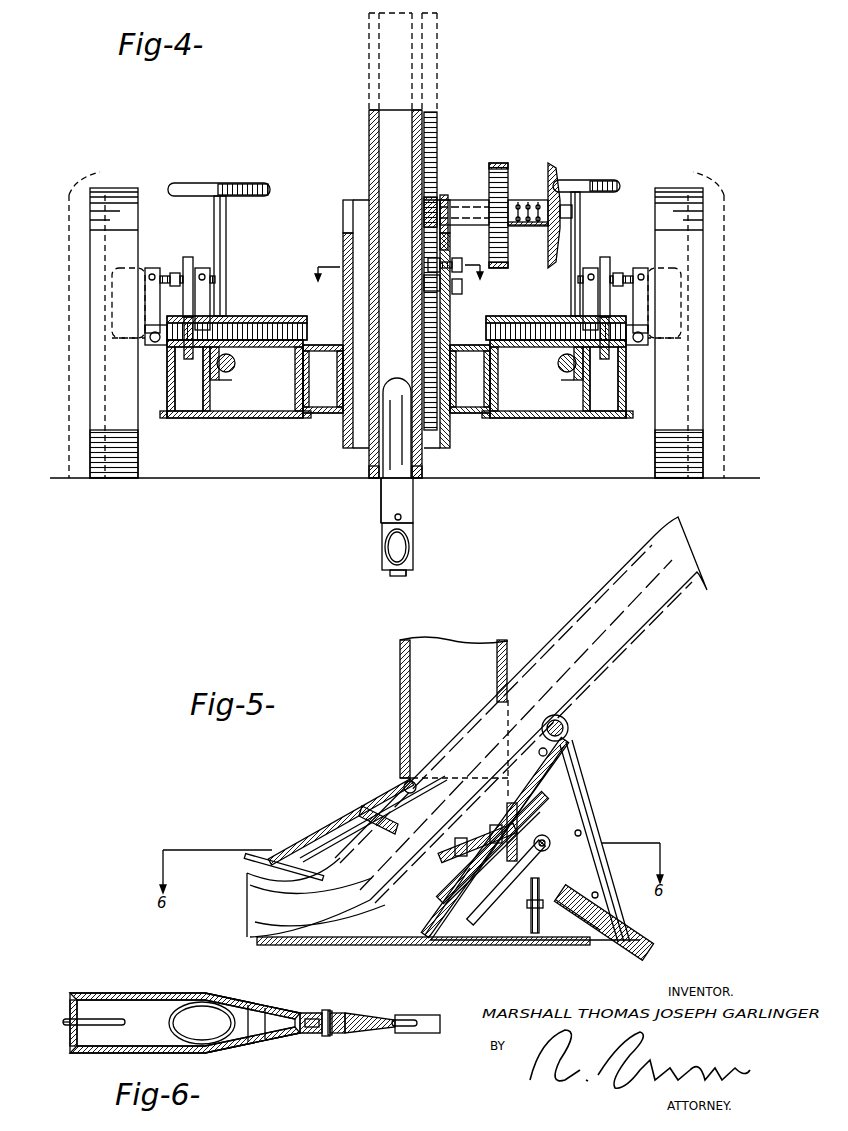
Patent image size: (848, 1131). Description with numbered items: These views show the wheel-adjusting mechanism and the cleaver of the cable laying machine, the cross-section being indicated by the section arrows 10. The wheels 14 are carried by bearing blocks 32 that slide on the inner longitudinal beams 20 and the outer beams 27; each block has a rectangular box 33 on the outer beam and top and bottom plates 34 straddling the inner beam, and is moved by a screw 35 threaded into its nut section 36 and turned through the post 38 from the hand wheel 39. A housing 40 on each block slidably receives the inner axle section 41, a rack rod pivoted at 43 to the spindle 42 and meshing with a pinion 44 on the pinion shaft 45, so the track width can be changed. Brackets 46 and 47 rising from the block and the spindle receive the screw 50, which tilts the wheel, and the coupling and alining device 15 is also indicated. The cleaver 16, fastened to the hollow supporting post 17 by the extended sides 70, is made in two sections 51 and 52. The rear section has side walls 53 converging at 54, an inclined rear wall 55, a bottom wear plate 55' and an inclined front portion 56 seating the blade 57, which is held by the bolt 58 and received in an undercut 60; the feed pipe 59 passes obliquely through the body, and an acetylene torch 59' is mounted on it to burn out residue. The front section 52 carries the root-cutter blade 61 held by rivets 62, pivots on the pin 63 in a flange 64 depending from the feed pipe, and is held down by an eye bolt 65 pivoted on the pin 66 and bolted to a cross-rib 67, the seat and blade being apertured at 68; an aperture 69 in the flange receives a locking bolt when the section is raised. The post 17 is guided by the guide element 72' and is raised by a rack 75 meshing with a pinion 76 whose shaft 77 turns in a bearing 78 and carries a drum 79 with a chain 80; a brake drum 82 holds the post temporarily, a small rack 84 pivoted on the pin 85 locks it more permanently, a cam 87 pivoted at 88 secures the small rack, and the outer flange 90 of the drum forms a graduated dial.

In FIG. 4, the feeder assembly section 10 is at (399, 282).
In FIG. 4, the wheels 14 is at (113, 190).
In FIG. 4, the coupling and alining device 15 is at (250, 283).
In FIG. 4, the cleaver 16 is at (381, 500).
In FIG. 5, the cleaver 16 is at (323, 805).
In FIG. 6, the cleaver 16 is at (187, 985).
In FIG. 4, the supporting post 17 is at (365, 168).
In FIG. 5, the supporting post 17 is at (400, 662).
In FIG. 4, the longitudinal beams 20 is at (296, 388).
In FIG. 4, the outer beams 27 is at (207, 418).
In FIG. 4, the bearing blocks 32 is at (276, 418).
In FIG. 4, the rectangular box 33 is at (185, 418).
In FIG. 4, the top and bottom plates 34 is at (283, 347).
In FIG. 4, the screw 35 is at (235, 364).
In FIG. 4, the nut section 36 is at (224, 375).
In FIG. 4, the post 38 is at (226, 215).
In FIG. 4, the hand wheel 39 is at (233, 183).
In FIG. 4, the housing 40 is at (275, 316).
In FIG. 4, the inner axle section 41 is at (307, 333).
In FIG. 4, the spindle 42 is at (145, 339).
In FIG. 4, the pivot 43 is at (155, 343).
In FIG. 4, the pinion 44 is at (188, 350).
In FIG. 4, the pinion shaft 45 is at (187, 257).
In FIG. 4, the bracket 46 is at (202, 268).
In FIG. 4, the bracket 47 is at (153, 268).
In FIG. 4, the screw 50 is at (224, 274).
In FIG. 4, the rear section 51 is at (413, 499).
In FIG. 5, the rear section 51 is at (318, 832).
In FIG. 6, the rear section 51 is at (68, 1015).
In FIG. 5, the front section 52 is at (590, 806).
In FIG. 6, the front section 52 is at (345, 1012).
In FIG. 4, the side walls 53 is at (382, 532).
In FIG. 5, the side walls 53 is at (336, 858).
In FIG. 6, the side walls 53 is at (105, 993).
In FIG. 6, the converging portion 54 is at (262, 1005).
In FIG. 4, the inclined rear wall 55 is at (378, 514).
In FIG. 5, the inclined rear wall 55 is at (366, 792).
In FIG. 4, the bottom wear plate 55' is at (429, 580).
In FIG. 5, the bottom wear plate 55' is at (423, 955).
In FIG. 5, the inclined portion 56 is at (570, 945).
In FIG. 4, the blade 57 is at (393, 576).
In FIG. 5, the blade 57 is at (635, 937).
In FIG. 6, the blade 57 is at (433, 1034).
In FIG. 5, the bolt 58 is at (535, 935).
In FIG. 4, the feed pipe 59 is at (376, 455).
In FIG. 5, the feed pipe 59 is at (457, 727).
In FIG. 6, the feed pipe 59 is at (184, 1023).
In FIG. 5, the acetylene torch 59' is at (283, 867).
In FIG. 6, the acetylene torch 59' is at (47, 1038).
In FIG. 5, the undercut 60 is at (470, 852).
In FIG. 6, the undercut 60 is at (265, 1038).
In FIG. 5, the root-cutter blade 61 is at (595, 828).
In FIG. 6, the root-cutter blade 61 is at (400, 1014).
In FIG. 5, the rivets 62 is at (598, 893).
In FIG. 5, the pin 63 is at (569, 730).
In FIG. 5, the flange 64 is at (565, 748).
In FIG. 5, the eye bolt 65 is at (490, 885).
In FIG. 6, the eye bolt 65 is at (342, 1040).
In FIG. 5, the pin 66 is at (542, 835).
In FIG. 6, the pin 66 is at (326, 1010).
In FIG. 5, the cross-rib 67 is at (478, 945).
In FIG. 5, the aperture 68 is at (492, 868).
In FIG. 5, the aperture 69 is at (548, 755).
In FIG. 4, the extended sides 70 is at (369, 470).
In FIG. 5, the extended sides 70 is at (397, 805).
In FIG. 4, the guide element 72' is at (381, 324).
In FIG. 4, the rack 75 is at (437, 128).
In FIG. 4, the pinion 76 is at (424, 216).
In FIG. 4, the shaft 77 is at (444, 210).
In FIG. 4, the bearing 78 is at (472, 200).
In FIG. 4, the drum 79 is at (517, 200).
In FIG. 4, the chain 80 is at (523, 226).
In FIG. 4, the brake drum 82 is at (498, 163).
In FIG. 4, the small rack 84 is at (424, 283).
In FIG. 4, the pin 85 is at (460, 285).
In FIG. 4, the cam 87 is at (428, 265).
In FIG. 4, the pivot 88 is at (450, 258).
In FIG. 4, the outer flange 90 is at (555, 170).